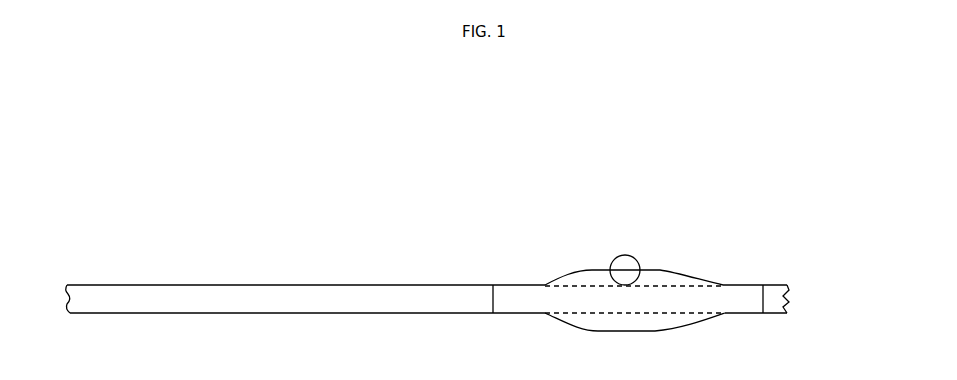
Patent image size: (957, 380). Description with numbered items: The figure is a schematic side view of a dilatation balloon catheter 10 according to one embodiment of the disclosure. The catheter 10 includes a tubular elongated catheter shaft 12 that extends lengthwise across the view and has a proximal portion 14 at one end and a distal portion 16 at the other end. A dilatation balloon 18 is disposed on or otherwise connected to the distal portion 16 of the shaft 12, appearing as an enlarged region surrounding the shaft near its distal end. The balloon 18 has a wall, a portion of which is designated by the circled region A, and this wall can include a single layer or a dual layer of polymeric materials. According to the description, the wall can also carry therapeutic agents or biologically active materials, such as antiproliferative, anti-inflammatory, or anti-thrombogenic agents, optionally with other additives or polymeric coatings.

The dilatation balloon catheter 10 is at (198, 183).
The catheter shaft 12 is at (365, 277).
The proximal portion 14 is at (107, 273).
The distal portion 16 is at (776, 278).
The dilatation balloon 18 is at (561, 271).
The portion of the balloon wall A is at (619, 256).